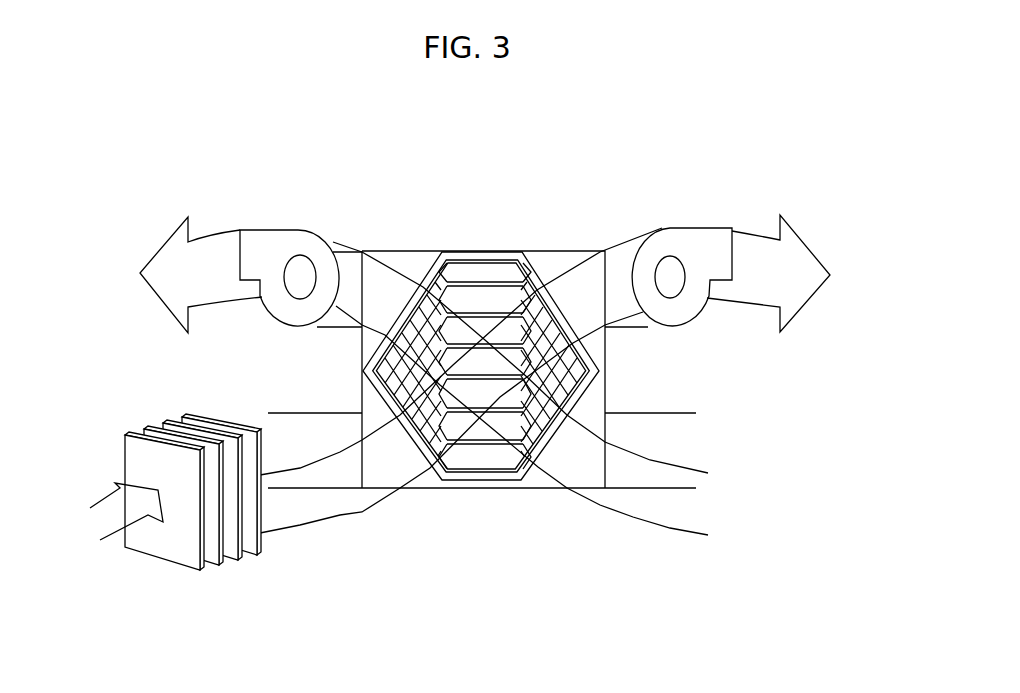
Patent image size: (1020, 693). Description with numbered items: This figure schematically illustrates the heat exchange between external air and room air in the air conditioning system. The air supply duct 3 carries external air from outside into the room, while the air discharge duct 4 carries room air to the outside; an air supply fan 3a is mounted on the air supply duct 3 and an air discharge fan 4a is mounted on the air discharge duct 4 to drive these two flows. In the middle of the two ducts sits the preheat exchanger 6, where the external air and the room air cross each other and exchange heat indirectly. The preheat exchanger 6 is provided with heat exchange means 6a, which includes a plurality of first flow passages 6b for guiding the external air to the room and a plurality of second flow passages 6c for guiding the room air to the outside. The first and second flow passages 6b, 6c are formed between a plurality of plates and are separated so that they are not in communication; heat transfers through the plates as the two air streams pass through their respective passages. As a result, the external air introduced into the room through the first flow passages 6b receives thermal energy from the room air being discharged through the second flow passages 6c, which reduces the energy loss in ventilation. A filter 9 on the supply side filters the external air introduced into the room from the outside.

The air supply duct 3 is at (674, 423).
The air supply fan 3a is at (699, 237).
The air discharge duct 4 is at (630, 320).
The air discharge fan 4a is at (269, 238).
The preheat exchanger 6 is at (412, 245).
The heat exchange means 6a is at (540, 270).
The first flow passages 6b is at (474, 430).
The second flow passages 6c is at (451, 308).
The filter 9 is at (170, 557).